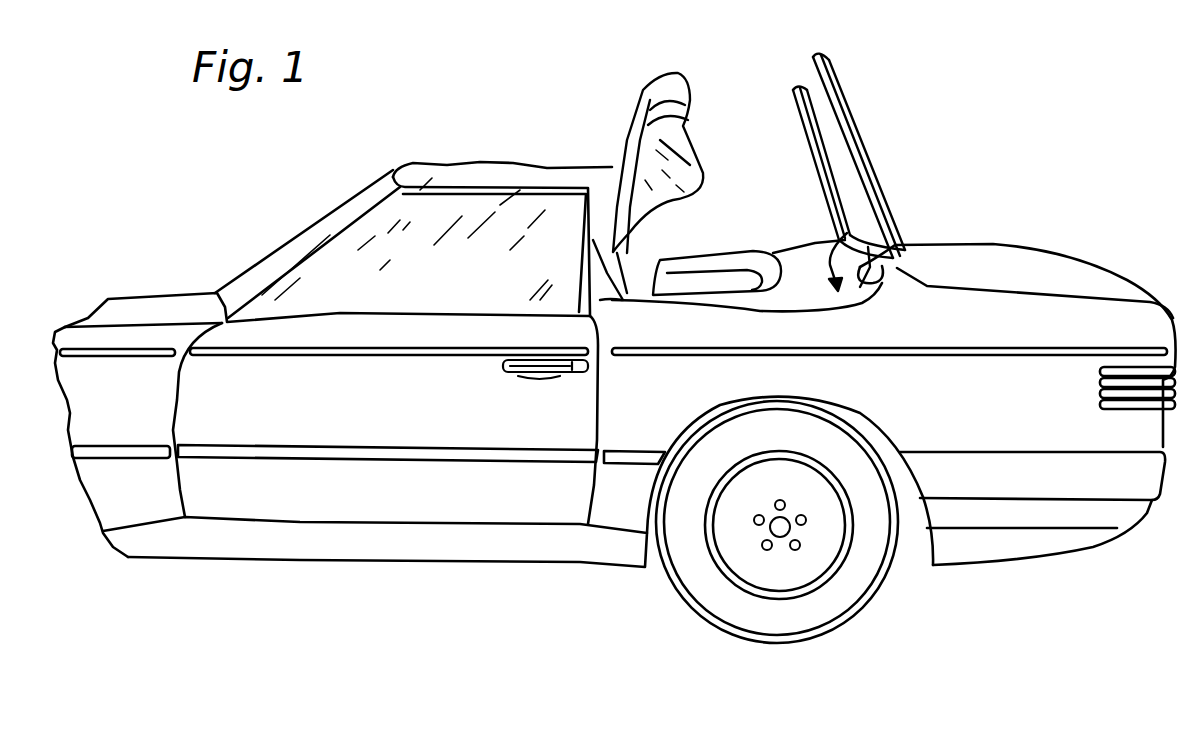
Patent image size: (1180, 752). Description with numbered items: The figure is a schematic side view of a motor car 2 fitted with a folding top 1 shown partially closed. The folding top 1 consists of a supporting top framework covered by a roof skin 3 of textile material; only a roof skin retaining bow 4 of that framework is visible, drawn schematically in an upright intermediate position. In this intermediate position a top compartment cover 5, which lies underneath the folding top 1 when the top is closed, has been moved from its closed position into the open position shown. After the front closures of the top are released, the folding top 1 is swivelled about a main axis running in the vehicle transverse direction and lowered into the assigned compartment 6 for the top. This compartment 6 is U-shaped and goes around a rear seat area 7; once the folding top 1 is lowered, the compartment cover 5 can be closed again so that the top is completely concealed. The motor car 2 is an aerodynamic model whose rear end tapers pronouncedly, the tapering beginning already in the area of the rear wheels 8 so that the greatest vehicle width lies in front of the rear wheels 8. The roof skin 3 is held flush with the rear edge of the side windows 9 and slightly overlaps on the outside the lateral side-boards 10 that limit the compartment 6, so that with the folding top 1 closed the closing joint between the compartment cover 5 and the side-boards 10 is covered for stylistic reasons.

The folding top 1 is at (413, 198).
The motor car 2 is at (1003, 243).
The roof skin 3 is at (447, 164).
The head restraint 4 is at (681, 78).
The top compartment cover 5 is at (853, 137).
The compartment for the top 6 is at (803, 266).
The rear seat area 7 is at (714, 272).
The rear wheels 8 is at (695, 560).
The side windows 9 is at (430, 295).
The lateral side-boards 10 is at (628, 302).